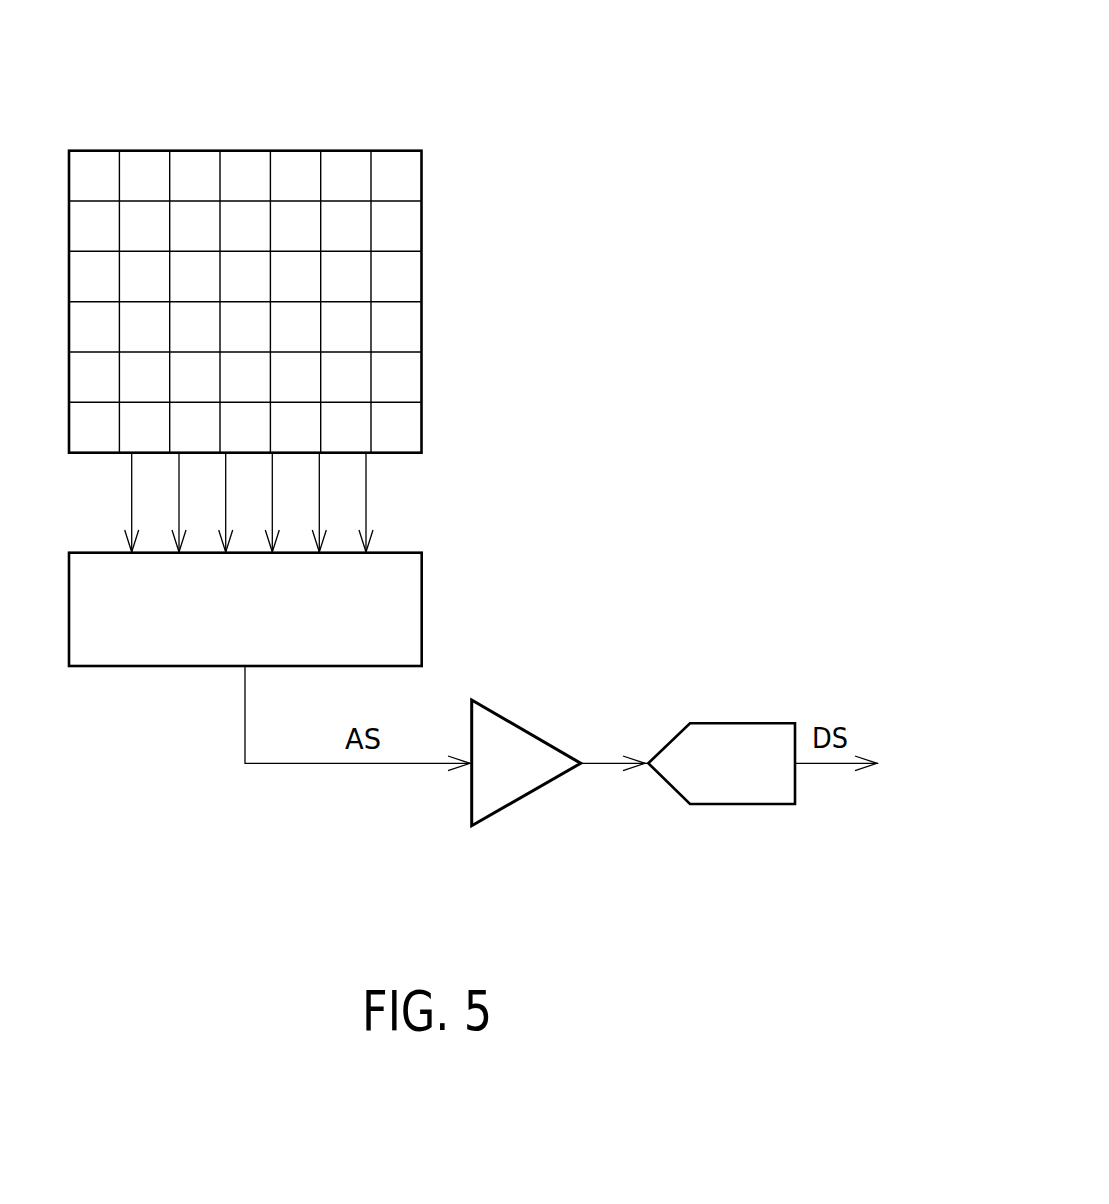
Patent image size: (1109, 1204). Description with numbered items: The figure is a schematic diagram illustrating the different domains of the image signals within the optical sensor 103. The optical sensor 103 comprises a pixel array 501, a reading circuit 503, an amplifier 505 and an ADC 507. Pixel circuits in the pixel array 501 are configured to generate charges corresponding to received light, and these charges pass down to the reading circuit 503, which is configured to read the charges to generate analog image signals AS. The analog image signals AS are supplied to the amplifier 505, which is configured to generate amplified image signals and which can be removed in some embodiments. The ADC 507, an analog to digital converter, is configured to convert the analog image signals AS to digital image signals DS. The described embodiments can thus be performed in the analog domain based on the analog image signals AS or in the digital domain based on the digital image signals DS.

The optical sensor 103 is at (712, 92).
The pixel array 501 is at (427, 143).
The reading circuit 503 is at (422, 583).
The amplifier 505 is at (517, 722).
The ADC (Analog to Digital Converter) 507 is at (727, 723).